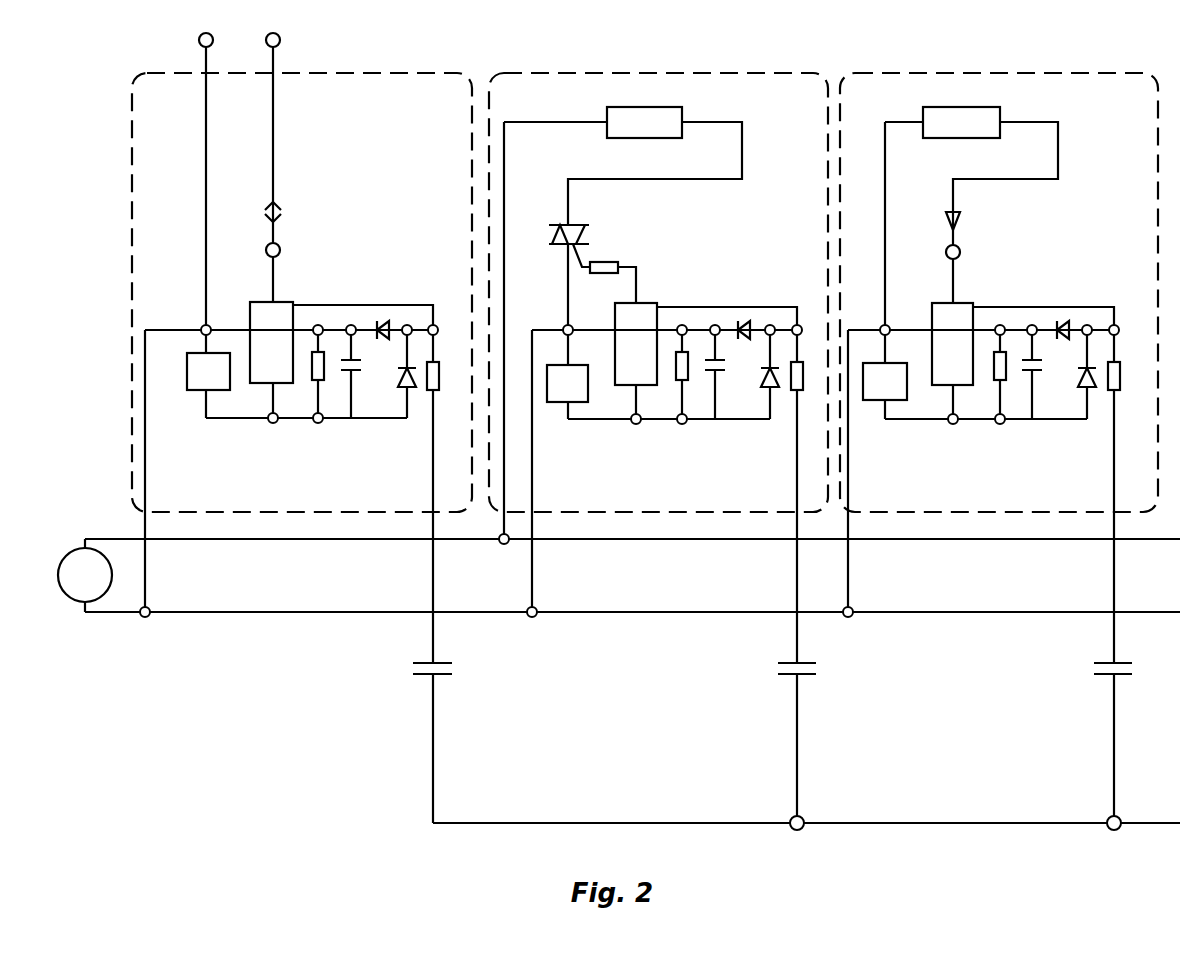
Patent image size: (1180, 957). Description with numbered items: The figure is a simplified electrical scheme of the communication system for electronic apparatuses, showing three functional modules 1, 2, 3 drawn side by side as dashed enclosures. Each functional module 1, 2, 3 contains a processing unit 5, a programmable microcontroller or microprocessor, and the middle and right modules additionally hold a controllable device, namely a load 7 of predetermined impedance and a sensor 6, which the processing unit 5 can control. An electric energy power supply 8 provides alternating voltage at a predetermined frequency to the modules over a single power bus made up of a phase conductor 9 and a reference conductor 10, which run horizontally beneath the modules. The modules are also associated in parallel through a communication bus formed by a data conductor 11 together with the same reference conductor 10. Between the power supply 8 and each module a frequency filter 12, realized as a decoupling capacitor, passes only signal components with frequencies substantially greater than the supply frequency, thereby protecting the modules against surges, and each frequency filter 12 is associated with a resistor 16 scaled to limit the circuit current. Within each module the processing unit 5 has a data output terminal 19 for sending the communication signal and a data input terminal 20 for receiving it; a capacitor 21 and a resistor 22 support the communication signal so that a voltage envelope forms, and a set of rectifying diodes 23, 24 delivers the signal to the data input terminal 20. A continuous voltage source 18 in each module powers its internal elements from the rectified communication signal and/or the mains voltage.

The functional module 1 is at (131, 165).
The functional module 2 is at (490, 80).
The functional module 3 is at (840, 80).
The processing unit 5 is at (258, 303).
The sensor 6 is at (923, 111).
The load 7 is at (606, 110).
The electric energy power supply 8 is at (66, 554).
The phase conductor 9 is at (124, 538).
The reference conductor 10 is at (180, 614).
The data conductor 11 is at (502, 824).
The frequency filter 12 is at (441, 656).
The resistor 16 is at (441, 370).
The continuous voltage source 18 is at (192, 392).
The data output terminal 19 is at (349, 304).
The data input terminal 20 is at (304, 328).
The capacitor 21 is at (360, 384).
The resistor 22 is at (328, 372).
The rectifying diode 23 is at (391, 324).
The rectifying diode 24 is at (415, 390).